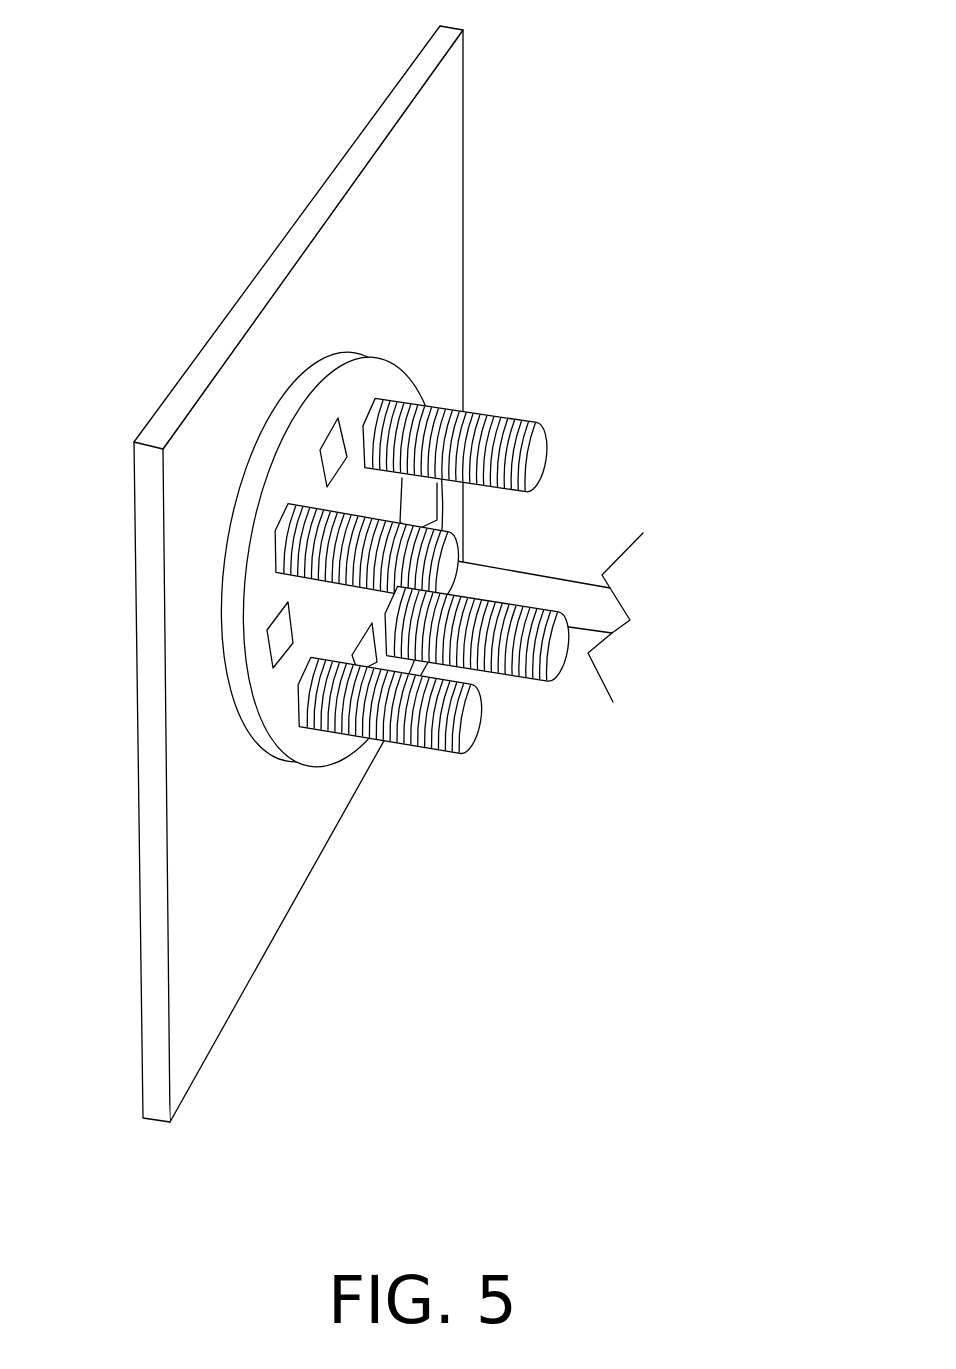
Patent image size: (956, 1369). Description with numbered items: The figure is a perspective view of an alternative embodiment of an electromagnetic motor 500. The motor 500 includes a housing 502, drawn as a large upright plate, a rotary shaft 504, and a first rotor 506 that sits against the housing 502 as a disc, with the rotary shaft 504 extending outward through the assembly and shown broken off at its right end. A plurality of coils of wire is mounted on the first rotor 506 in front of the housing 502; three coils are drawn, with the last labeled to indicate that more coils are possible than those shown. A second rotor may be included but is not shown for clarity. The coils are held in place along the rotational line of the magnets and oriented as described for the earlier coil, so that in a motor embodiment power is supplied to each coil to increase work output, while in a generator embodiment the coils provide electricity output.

The electromagnetic motor 500 is at (527, 44).
The housing 502 is at (400, 73).
The rotary shaft 504 is at (563, 600).
The first rotor 506 is at (385, 372).